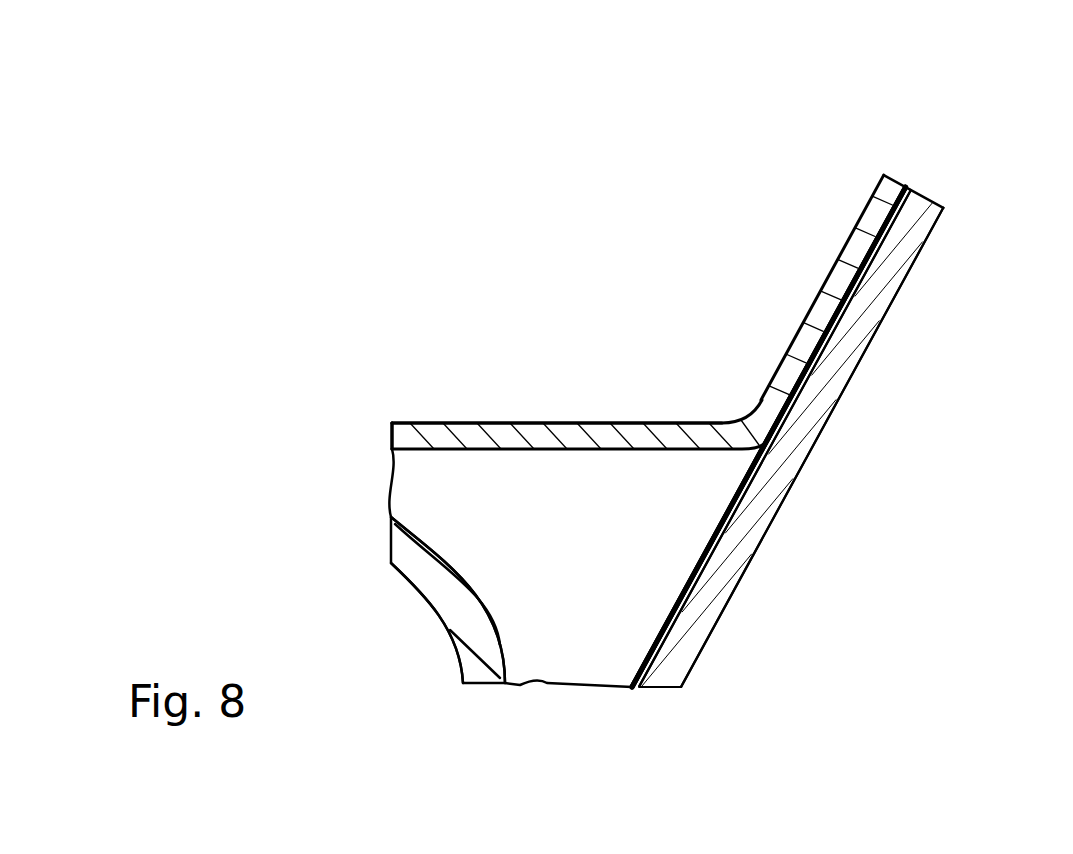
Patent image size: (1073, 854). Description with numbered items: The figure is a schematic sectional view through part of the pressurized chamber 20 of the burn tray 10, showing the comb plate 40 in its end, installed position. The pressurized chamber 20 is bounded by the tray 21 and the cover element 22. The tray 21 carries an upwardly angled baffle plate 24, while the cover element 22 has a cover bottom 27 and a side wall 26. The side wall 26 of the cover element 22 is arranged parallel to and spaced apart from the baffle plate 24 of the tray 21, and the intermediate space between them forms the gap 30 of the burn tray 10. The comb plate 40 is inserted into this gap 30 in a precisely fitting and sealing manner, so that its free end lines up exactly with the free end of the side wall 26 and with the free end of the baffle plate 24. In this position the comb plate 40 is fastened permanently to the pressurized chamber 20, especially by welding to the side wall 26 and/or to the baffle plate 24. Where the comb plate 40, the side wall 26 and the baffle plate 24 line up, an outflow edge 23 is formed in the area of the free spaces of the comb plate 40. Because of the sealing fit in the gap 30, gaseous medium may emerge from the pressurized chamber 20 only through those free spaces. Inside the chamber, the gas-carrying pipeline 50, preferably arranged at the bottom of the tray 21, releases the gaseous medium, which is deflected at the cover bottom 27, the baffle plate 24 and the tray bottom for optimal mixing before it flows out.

The burn tray 10 is at (553, 298).
The pressurized chamber 20 is at (585, 490).
The tray 21 is at (727, 572).
The cover element 22 is at (498, 433).
The outflow edge 23 is at (913, 188).
The baffle plate 24 is at (823, 392).
The side wall 26 is at (860, 243).
The cover bottom 27 is at (408, 437).
The gap 30 is at (867, 270).
The comb plate 40 is at (700, 555).
The gas-carrying pipeline 50 is at (452, 607).